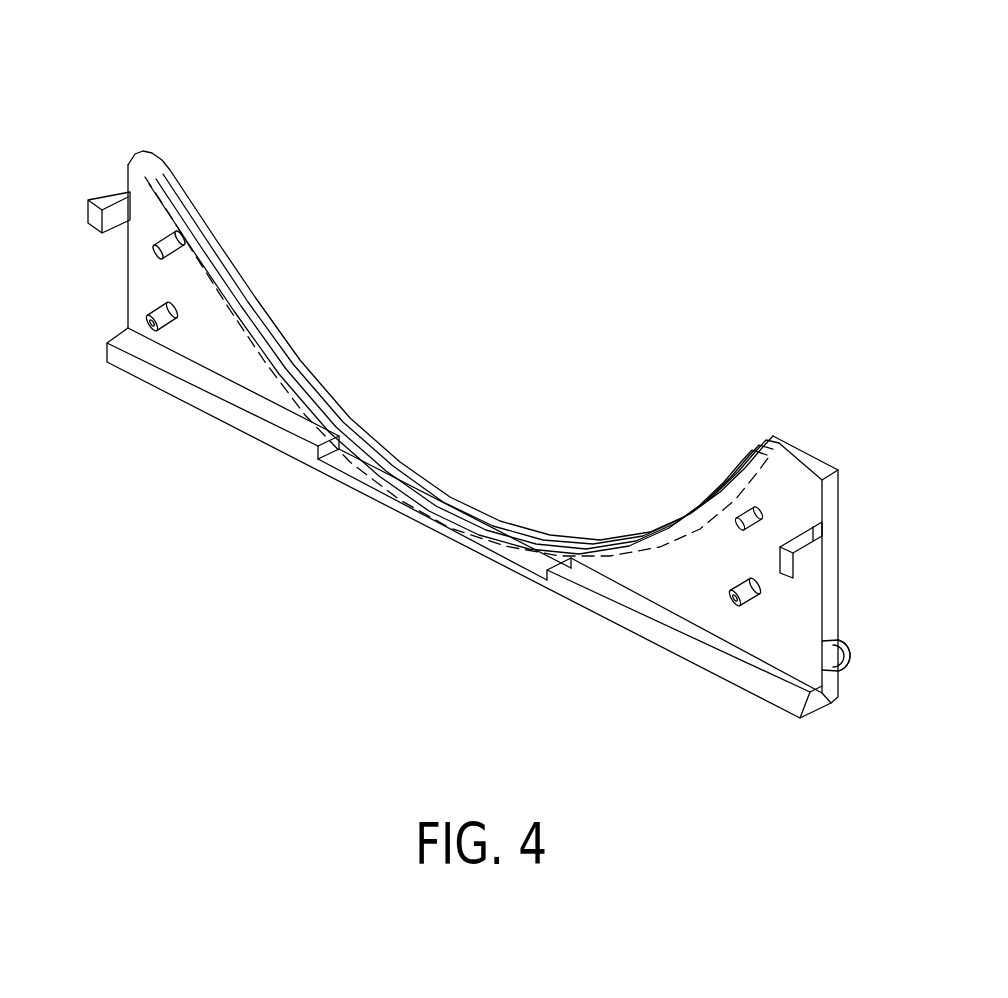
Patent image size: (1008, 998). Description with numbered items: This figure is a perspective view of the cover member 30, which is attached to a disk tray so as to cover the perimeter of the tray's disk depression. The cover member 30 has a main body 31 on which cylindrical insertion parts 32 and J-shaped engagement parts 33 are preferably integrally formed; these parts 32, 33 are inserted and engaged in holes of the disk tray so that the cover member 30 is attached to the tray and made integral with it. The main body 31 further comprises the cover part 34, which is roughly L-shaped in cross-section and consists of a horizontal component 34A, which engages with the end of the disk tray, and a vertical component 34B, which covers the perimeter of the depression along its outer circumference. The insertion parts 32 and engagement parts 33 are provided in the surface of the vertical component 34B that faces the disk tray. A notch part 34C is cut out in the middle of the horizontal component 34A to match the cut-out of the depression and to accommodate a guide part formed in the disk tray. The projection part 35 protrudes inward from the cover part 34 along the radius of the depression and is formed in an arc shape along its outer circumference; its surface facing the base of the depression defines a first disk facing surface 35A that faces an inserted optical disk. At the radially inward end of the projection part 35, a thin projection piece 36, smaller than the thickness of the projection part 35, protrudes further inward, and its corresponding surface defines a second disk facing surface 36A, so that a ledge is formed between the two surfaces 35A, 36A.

The cover member 30 is at (322, 123).
The main body 31 is at (128, 165).
The cylindrical insertion parts 32 is at (180, 253).
The J-shaped engagement parts 33 is at (88, 218).
The cover part 34 is at (843, 778).
The horizontal component 34A is at (812, 700).
The vertical component 34B is at (832, 620).
The notch part 34C is at (521, 555).
The projection part 35 is at (187, 222).
The first disk facing surface 35A is at (273, 358).
The projection piece 36 is at (257, 302).
The second disk facing surface 36A is at (367, 435).